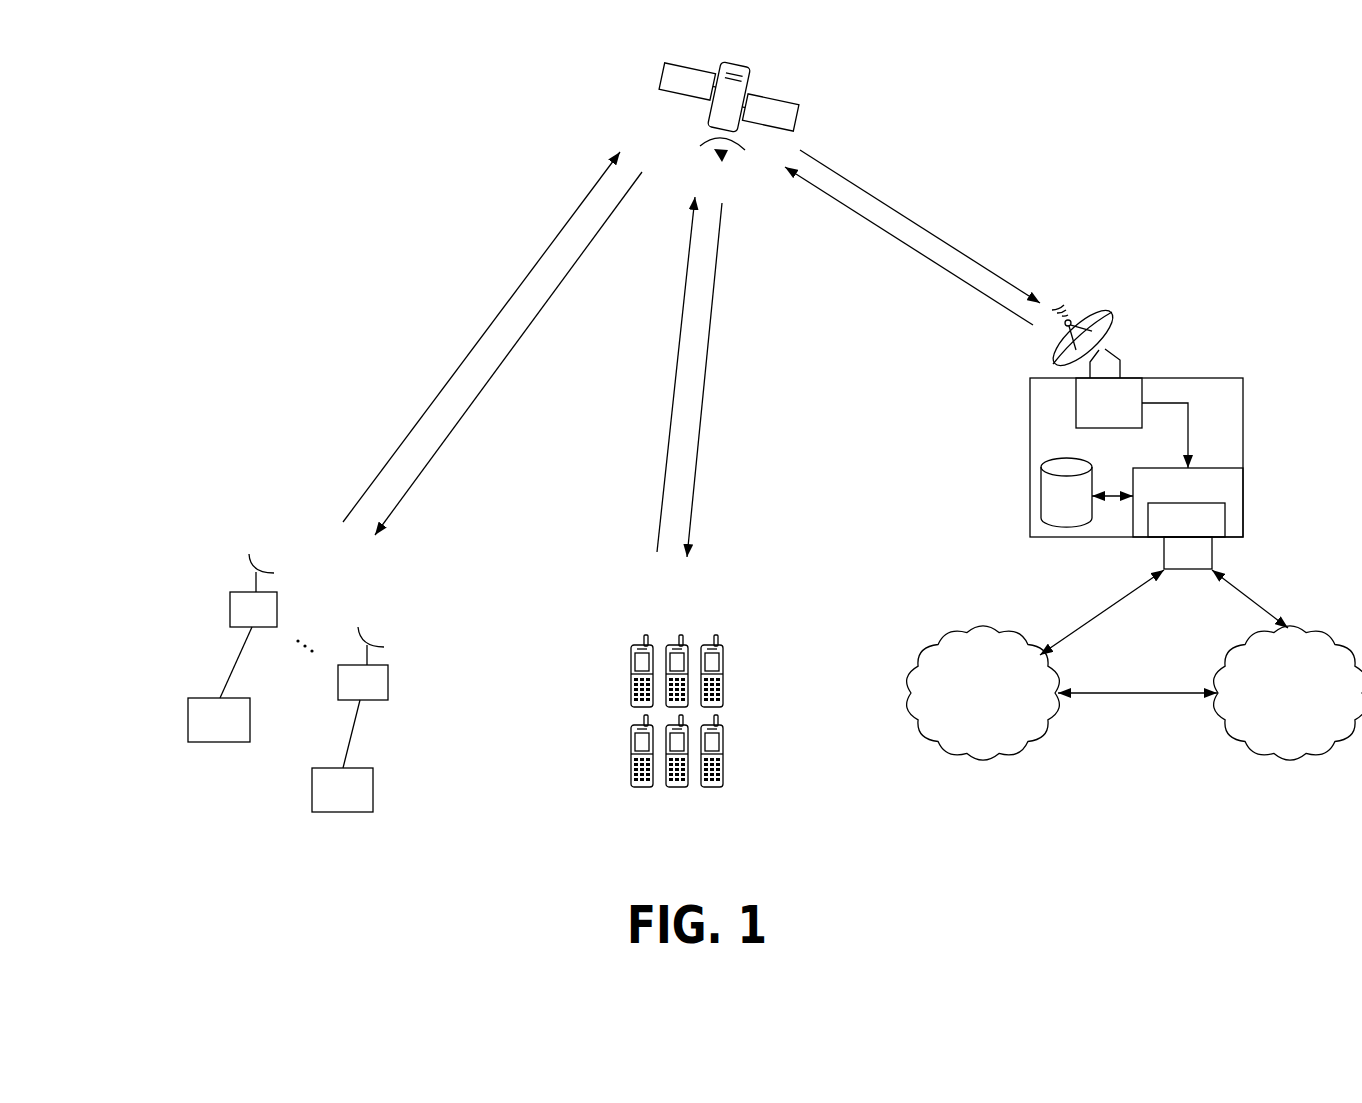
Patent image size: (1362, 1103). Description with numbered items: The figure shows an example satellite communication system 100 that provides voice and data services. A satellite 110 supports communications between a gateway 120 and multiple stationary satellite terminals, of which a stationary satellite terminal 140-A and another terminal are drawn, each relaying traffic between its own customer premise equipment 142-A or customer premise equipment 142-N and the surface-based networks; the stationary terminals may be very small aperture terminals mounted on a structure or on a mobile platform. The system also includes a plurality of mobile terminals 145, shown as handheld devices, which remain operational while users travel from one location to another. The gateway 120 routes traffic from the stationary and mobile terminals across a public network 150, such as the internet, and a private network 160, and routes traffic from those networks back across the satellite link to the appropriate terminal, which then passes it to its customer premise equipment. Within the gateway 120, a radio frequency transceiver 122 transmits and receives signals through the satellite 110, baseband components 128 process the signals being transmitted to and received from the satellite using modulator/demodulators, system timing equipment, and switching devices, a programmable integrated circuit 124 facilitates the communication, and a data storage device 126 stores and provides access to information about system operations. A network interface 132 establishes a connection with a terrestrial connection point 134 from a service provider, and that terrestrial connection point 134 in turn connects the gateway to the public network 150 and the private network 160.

The satellite communication system 100 is at (460, 81).
The satellite 110 is at (800, 113).
The gateway 120 is at (1137, 378).
The radio frequency transceiver 122 is at (1115, 318).
The programmable integrated circuit 124 is at (1188, 502).
The data storage device 126 is at (1066, 492).
The baseband components 128 is at (1109, 403).
The network interface 132 is at (1186, 520).
The terrestrial connection point 134 is at (1188, 553).
The stationary satellite terminal 140-A is at (230, 610).
The customer premise equipment 142-A is at (217, 742).
The customer premise equipment 142-N is at (388, 682).
The mobile terminals 145 is at (623, 622).
The public network 150 is at (983, 693).
The private network 160 is at (1288, 693).